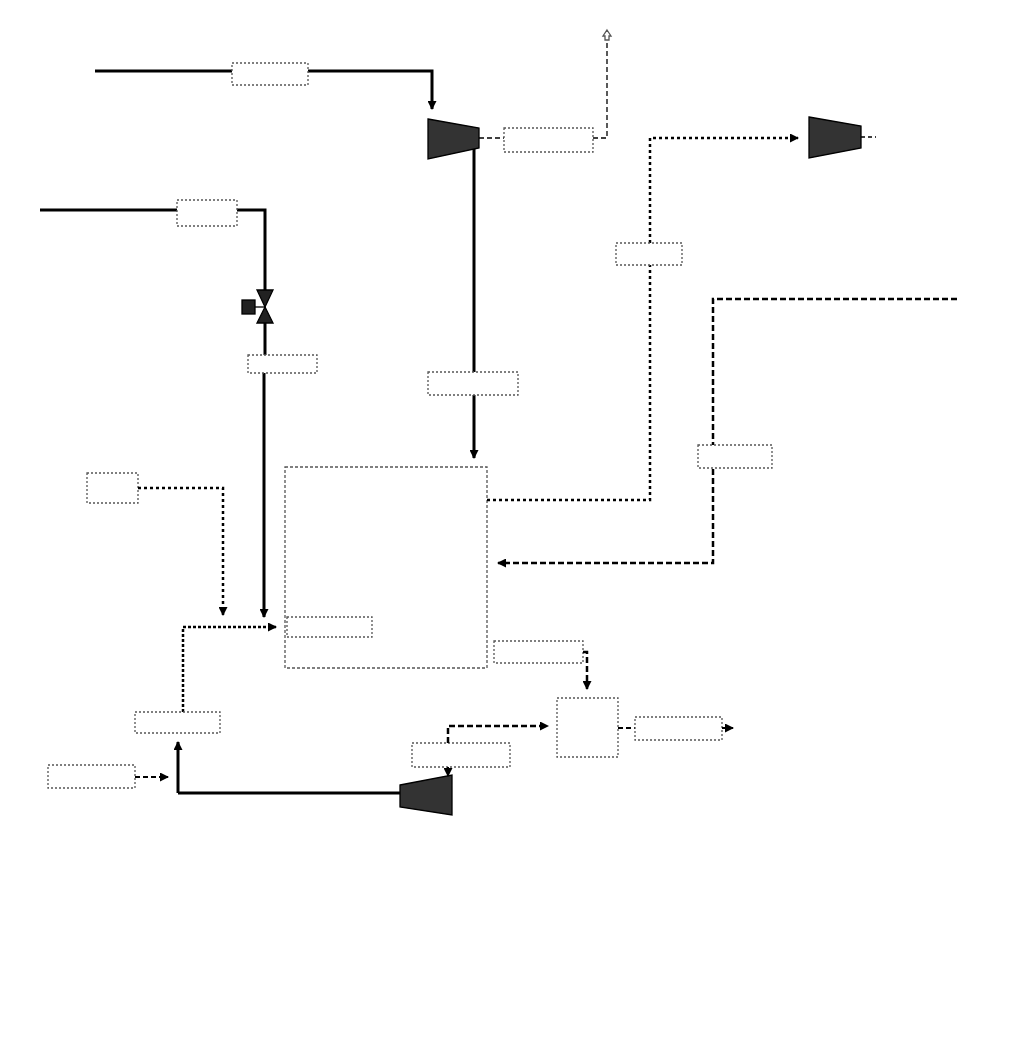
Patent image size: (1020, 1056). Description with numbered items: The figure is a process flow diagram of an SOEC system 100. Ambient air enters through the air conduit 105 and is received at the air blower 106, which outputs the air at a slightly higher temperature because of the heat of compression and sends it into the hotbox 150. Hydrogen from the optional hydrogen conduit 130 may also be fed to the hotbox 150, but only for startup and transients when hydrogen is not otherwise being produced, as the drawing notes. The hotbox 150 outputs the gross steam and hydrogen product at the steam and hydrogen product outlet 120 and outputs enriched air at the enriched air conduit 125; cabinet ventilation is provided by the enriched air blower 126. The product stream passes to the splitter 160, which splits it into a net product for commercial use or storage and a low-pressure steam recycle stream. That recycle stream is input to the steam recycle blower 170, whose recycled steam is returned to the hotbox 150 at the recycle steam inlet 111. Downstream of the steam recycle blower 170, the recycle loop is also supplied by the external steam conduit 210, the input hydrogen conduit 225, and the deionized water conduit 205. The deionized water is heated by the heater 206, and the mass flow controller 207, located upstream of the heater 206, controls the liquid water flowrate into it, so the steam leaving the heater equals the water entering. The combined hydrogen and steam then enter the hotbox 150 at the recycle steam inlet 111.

The SOEC system 100 is at (498, 518).
The air conduit 105 is at (263, 76).
The air blower 106 is at (504, 235).
The recycle steam inlet 111 is at (295, 664).
The steam and hydrogen product outlet 120 is at (489, 647).
The enriched air conduit 125 is at (642, 309).
The enriched air blower 126 is at (842, 127).
The optional hydrogen conduit 130 is at (727, 421).
The hotbox 150 is at (386, 567).
The splitter 160 is at (710, 738).
The steam recycle blower 170 is at (363, 783).
The deionized water conduit 205 is at (152, 234).
The heater 206 is at (282, 470).
The mass flow controller 207 is at (275, 306).
The external steam conduit 210 is at (134, 752).
The input hydrogen conduit 225 is at (155, 533).